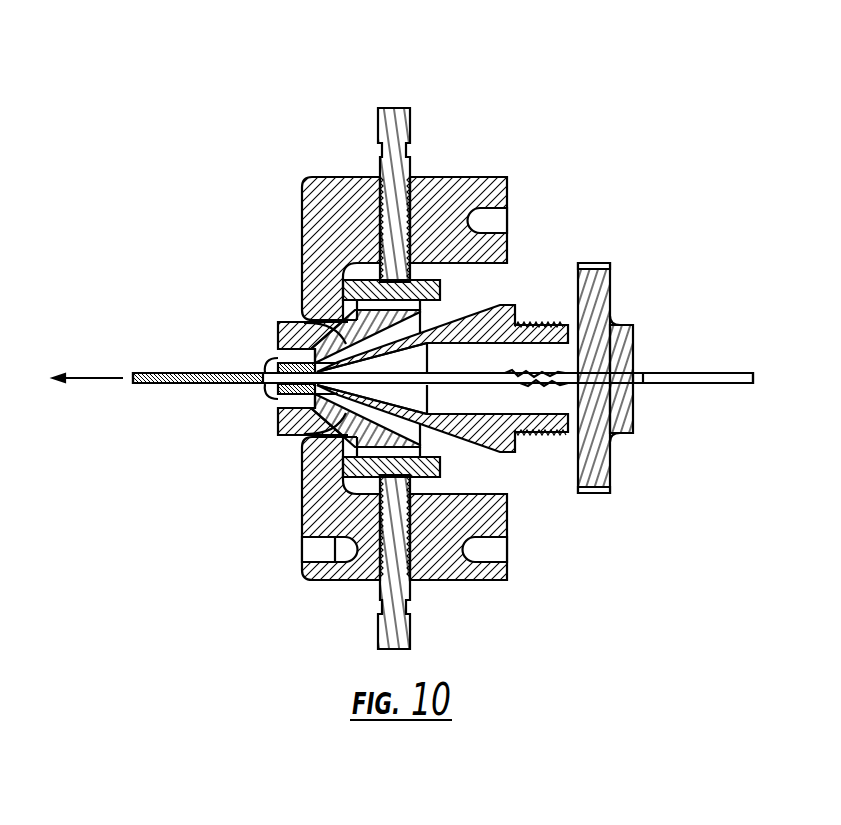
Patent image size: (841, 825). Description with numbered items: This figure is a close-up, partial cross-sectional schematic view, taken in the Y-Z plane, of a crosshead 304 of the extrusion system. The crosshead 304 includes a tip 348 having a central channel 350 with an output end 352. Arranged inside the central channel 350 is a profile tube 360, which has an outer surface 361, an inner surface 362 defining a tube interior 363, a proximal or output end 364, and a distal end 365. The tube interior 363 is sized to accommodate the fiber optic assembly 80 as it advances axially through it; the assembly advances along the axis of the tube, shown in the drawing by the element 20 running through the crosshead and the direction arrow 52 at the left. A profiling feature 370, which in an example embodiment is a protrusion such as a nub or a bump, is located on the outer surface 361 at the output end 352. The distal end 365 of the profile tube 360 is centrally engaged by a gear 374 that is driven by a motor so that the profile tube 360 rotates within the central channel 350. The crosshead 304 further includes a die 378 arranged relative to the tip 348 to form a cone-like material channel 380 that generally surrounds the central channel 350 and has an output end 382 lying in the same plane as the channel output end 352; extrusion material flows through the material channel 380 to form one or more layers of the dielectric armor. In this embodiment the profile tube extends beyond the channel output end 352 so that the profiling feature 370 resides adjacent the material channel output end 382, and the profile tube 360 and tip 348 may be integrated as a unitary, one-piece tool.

The crosshead 304 is at (407, 341).
The wire 20 is at (146, 371).
The feed direction arrow 52 is at (155, 386).
The fiber optic assembly 80 is at (686, 373).
The tip 348 is at (513, 305).
The central channel 350 is at (511, 400).
The output end 352 is at (281, 405).
The profile tube 360 is at (490, 388).
The outer surface 361 is at (276, 398).
The inner surface 362 is at (611, 372).
The tube interior 363 is at (552, 387).
The proximal end 364 is at (270, 386).
The distal end 365 is at (624, 377).
The profiling feature 370 is at (270, 362).
The gear 374 is at (606, 266).
The die 378 is at (282, 322).
The material channel 380 is at (278, 325).
The output end 382 is at (272, 352).